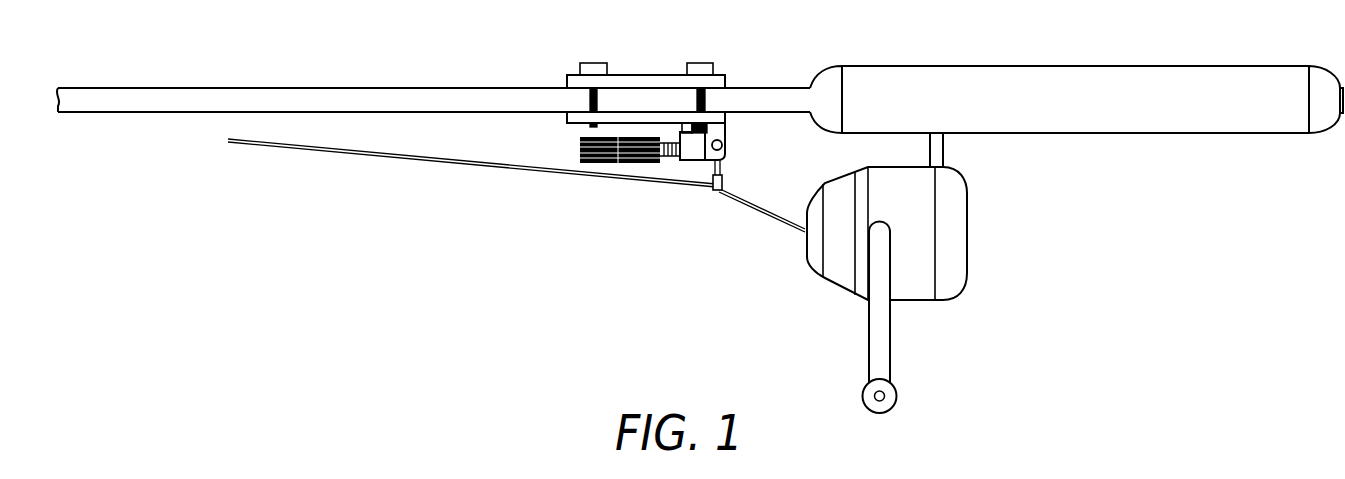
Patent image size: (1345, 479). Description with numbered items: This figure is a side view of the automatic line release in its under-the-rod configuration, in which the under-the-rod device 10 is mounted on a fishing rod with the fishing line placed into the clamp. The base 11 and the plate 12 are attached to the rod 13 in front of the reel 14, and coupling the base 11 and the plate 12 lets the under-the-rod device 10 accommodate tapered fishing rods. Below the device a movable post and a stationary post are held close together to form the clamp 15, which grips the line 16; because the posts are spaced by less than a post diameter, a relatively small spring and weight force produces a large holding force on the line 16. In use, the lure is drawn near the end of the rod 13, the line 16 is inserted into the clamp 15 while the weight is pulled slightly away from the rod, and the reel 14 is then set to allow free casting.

The under-the-rod device 10 is at (628, 77).
The base 11 is at (567, 79).
The plate 12 is at (718, 130).
The rod 13 is at (220, 86).
The reel 14 is at (958, 244).
The clamp 15 is at (714, 192).
The line 16 is at (448, 163).